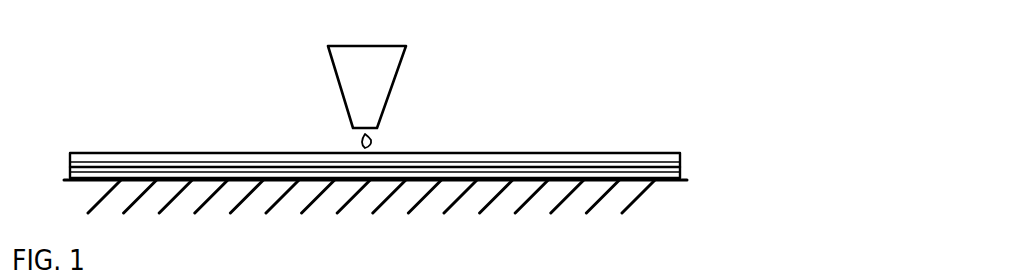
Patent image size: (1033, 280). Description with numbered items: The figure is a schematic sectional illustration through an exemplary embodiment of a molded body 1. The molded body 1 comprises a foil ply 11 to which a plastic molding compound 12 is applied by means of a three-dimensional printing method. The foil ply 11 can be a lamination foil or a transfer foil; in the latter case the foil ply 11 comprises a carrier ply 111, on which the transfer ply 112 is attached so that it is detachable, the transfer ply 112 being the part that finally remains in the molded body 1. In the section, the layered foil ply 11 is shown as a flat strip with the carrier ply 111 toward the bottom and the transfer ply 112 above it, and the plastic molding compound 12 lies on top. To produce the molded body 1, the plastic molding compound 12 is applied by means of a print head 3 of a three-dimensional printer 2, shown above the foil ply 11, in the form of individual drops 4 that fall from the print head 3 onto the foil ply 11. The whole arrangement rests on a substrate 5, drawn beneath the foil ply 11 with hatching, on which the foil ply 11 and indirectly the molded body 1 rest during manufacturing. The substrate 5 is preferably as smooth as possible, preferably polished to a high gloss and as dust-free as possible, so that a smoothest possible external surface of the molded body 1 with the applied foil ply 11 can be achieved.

The molded body 1 is at (658, 143).
The three-dimensional printer 2 is at (463, 40).
The print head 3 is at (403, 70).
The drops 4 is at (372, 140).
The substrate 5 is at (636, 204).
The foil ply 11 is at (371, 168).
The plastic molding compound 12 is at (592, 157).
The carrier ply 111 is at (73, 183).
The transfer ply 112 is at (68, 166).